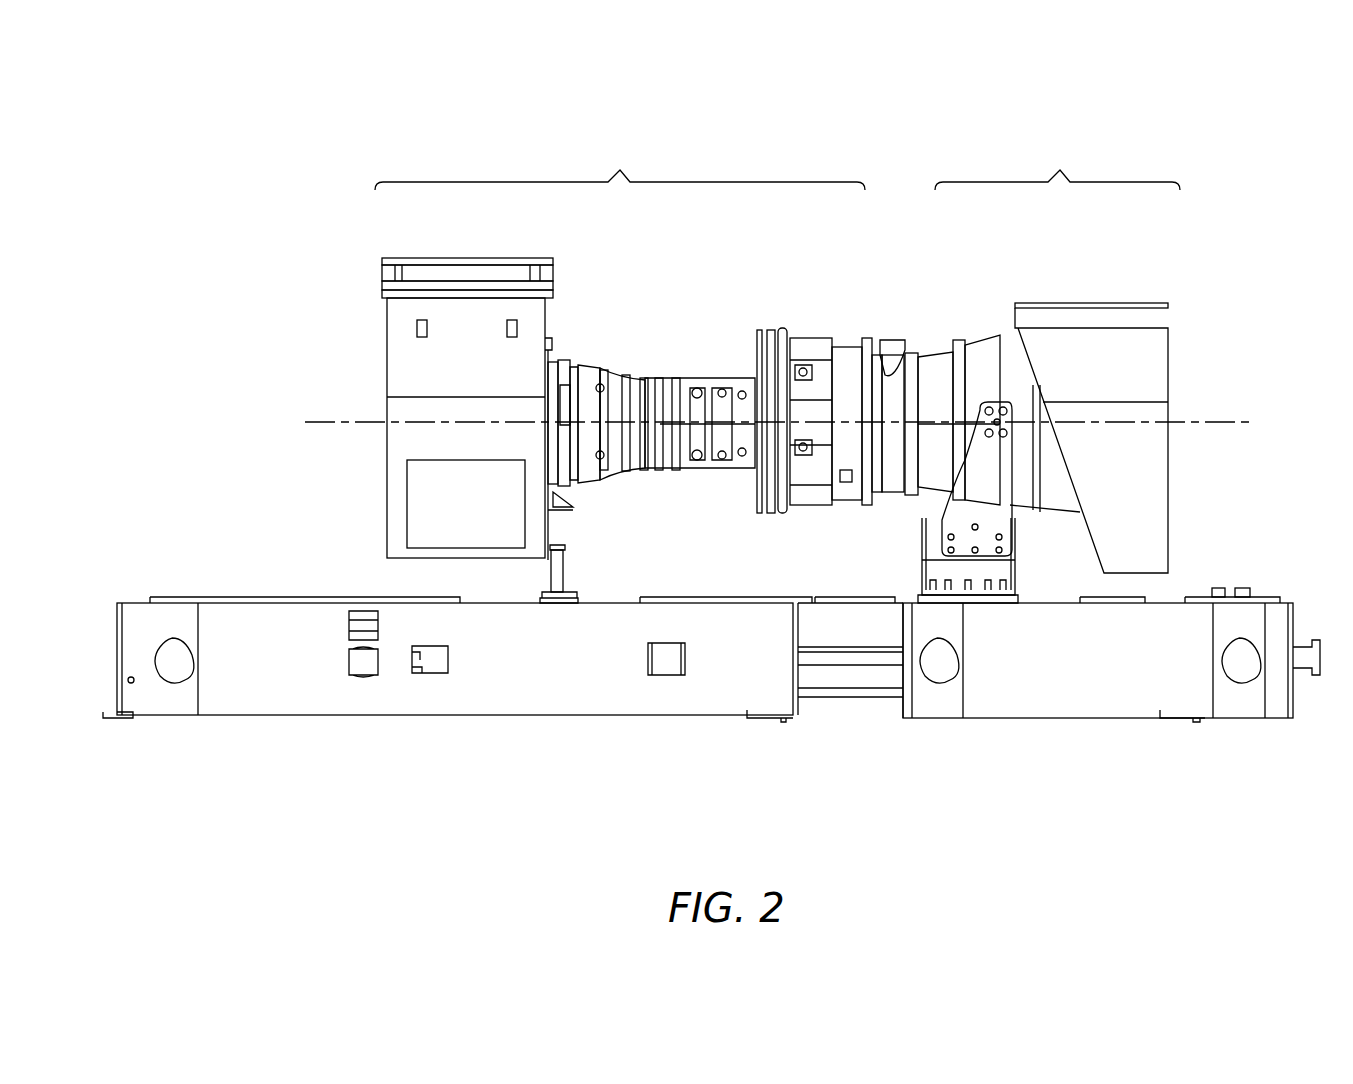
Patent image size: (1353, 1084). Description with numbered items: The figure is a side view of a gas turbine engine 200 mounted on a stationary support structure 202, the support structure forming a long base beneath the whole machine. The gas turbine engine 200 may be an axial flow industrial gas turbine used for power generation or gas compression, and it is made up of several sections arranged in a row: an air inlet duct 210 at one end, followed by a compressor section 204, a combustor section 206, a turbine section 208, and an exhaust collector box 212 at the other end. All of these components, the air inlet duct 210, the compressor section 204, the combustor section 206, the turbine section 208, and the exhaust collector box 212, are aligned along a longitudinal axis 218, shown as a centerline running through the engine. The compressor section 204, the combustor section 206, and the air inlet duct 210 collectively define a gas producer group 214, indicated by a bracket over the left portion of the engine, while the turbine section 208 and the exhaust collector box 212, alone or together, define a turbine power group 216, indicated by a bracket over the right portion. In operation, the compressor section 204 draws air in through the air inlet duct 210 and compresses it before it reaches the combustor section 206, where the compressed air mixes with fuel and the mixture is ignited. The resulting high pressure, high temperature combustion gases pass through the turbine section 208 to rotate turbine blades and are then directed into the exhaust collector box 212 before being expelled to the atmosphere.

The gas turbine engine 200 is at (1210, 163).
The stationary support structure 202 is at (282, 715).
The compressor section 204 is at (637, 378).
The combustor section 206 is at (848, 345).
The turbine section 208 is at (997, 380).
The air inlet duct 210 is at (437, 255).
The exhaust collector box 212 is at (1137, 303).
The gas producer group 214 is at (622, 170).
The turbine power group 216 is at (1060, 170).
The longitudinal axis 218 is at (323, 421).